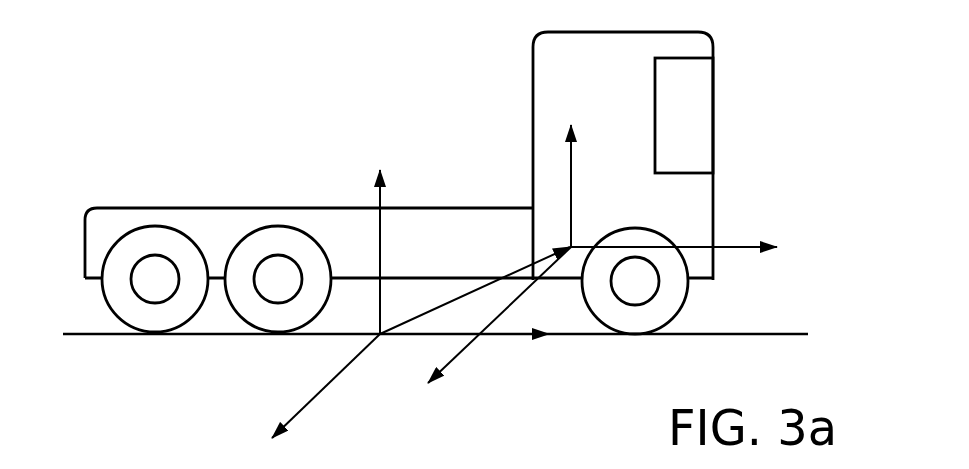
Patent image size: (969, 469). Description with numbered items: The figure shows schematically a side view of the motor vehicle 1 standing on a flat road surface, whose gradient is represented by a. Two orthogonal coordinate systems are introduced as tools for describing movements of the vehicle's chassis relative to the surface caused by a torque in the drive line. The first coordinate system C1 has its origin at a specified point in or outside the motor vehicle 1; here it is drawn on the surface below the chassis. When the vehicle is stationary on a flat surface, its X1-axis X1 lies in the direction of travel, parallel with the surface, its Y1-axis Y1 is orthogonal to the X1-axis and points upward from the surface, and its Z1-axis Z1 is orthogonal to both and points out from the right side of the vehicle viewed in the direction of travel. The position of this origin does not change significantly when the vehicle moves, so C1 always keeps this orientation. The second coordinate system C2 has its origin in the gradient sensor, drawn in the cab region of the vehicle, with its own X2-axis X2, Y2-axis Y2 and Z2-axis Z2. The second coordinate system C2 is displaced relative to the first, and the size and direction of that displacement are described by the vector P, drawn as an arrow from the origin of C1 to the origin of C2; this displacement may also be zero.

The motor vehicle 1 is at (350, 162).
The road gradient a is at (454, 332).
The first orthogonal coordinate system C1 is at (417, 314).
The X1-axis X1 is at (471, 353).
The Y1-axis Y1 is at (404, 251).
The Z1-axis Z1 is at (326, 397).
The vector P is at (475, 290).
The second orthogonal coordinate system C2 is at (606, 263).
The X2-axis X2 is at (677, 227).
The Y2-axis Y2 is at (593, 185).
The Z2-axis Z2 is at (499, 325).